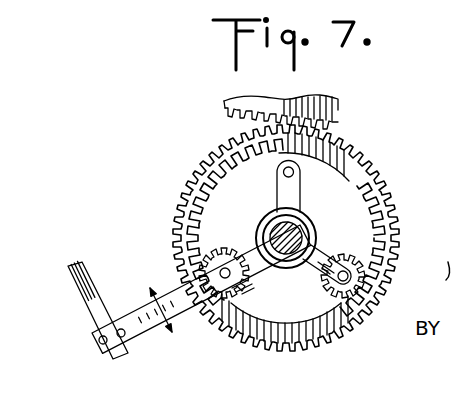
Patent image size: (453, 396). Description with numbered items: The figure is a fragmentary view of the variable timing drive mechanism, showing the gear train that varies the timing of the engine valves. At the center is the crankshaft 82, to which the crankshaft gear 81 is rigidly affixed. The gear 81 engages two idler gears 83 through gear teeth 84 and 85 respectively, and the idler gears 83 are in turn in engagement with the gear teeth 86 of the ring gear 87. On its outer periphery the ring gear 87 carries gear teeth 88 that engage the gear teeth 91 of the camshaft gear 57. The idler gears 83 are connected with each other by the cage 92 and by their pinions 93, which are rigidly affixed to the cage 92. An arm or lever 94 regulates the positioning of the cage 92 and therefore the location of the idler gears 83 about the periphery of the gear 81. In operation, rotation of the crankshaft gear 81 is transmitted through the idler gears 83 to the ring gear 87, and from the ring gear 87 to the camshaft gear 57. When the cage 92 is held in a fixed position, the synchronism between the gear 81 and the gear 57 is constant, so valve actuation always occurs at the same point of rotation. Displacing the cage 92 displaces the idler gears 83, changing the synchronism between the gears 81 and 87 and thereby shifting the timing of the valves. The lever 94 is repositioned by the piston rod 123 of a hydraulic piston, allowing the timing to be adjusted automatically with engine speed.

The camshaft gear 57 is at (312, 104).
The gear teeth 91 is at (332, 114).
The gear teeth 88 is at (352, 148).
The ring gear 87 is at (370, 165).
The pinions 93 is at (283, 172).
The cage 92 is at (277, 193).
The idler gears 83 is at (226, 249).
The crankshaft 82 is at (302, 237).
The gear teeth 85 is at (345, 262).
The crankshaft gear 81 is at (256, 286).
The gear teeth 84 is at (308, 283).
The gear teeth 86 is at (343, 328).
The arm or lever 94 is at (148, 322).
The piston rod 123 is at (90, 305).